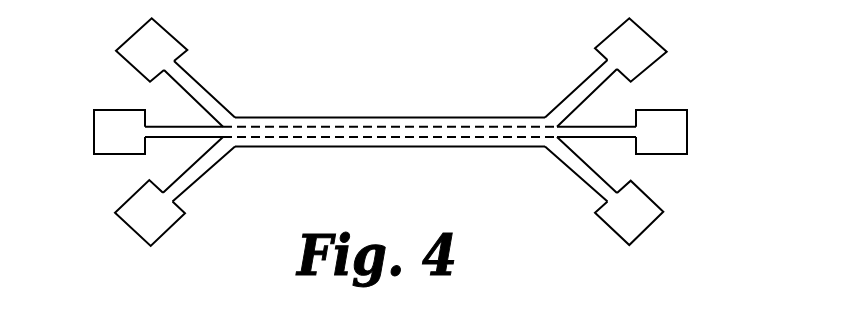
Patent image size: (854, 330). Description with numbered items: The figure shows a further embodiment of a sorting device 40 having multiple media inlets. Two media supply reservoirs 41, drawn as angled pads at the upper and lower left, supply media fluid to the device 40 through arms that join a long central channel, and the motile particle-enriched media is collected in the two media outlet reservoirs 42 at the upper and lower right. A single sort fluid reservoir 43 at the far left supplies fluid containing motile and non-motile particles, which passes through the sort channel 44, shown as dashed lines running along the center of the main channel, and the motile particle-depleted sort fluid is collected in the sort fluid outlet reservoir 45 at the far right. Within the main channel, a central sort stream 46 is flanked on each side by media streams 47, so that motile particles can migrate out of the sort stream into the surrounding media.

The device 40 is at (391, 135).
The media supply reservoirs 41 is at (142, 45).
The media outlet reservoirs 42 is at (638, 43).
The sort fluid reservoir 43 is at (105, 127).
The sort channel 44 is at (378, 137).
The sort fluid outlet reservoir 45 is at (675, 127).
The central sort stream 46 is at (492, 130).
The media streams 47 is at (288, 119).